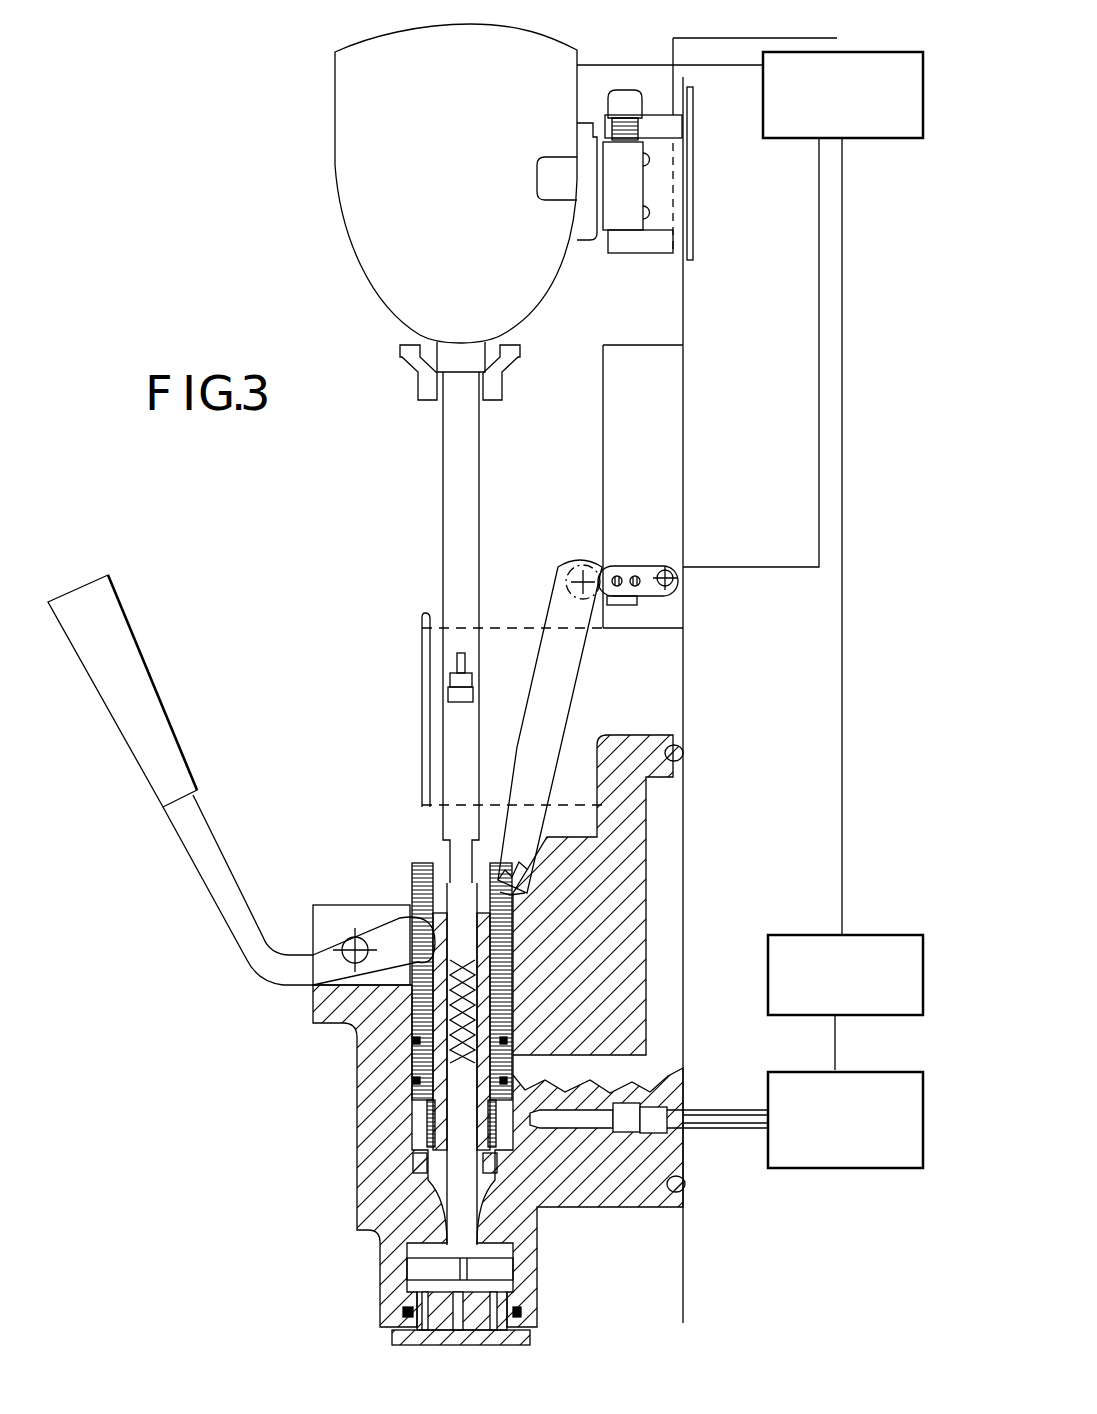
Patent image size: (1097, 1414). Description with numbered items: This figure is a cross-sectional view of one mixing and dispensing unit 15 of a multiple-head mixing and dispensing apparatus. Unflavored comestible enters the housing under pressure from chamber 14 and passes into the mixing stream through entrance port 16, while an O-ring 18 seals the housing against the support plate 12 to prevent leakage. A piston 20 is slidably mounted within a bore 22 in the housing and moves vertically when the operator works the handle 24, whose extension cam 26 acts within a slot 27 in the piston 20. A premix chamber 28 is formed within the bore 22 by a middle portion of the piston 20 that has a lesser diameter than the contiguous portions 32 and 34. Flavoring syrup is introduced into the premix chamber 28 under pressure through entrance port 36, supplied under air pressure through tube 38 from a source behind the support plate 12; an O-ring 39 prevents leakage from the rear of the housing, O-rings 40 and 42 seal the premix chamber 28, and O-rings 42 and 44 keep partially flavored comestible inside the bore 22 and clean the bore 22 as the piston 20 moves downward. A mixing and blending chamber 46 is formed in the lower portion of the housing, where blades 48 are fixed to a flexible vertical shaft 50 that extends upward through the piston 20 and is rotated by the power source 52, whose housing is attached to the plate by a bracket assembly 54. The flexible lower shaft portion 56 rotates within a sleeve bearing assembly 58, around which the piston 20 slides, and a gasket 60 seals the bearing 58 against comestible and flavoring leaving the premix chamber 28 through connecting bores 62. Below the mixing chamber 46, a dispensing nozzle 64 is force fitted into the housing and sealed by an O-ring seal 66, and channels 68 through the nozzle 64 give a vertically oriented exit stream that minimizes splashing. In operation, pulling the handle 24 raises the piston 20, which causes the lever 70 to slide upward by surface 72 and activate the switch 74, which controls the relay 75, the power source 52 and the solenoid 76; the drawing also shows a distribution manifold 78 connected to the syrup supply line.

The support plate 12 is at (688, 675).
The chamber 14 is at (670, 878).
The mixing and dispensing unit 15 is at (365, 605).
The entrance port 16 is at (567, 1052).
The O-ring 18 is at (685, 752).
The piston 20 is at (423, 866).
The bore 22 is at (524, 922).
The handle 24 is at (88, 580).
The extension cam 26 is at (426, 948).
The slot 27 is at (434, 918).
The premix chamber 28 is at (410, 1130).
The contiguous portion 32 is at (502, 950).
The contiguous portion 34 is at (499, 1177).
The entrance port 36 is at (592, 1125).
The tube 38 is at (652, 1103).
The O-ring 39 is at (672, 1108).
The O-ring 40 is at (411, 1160).
The O-ring 42 is at (514, 1080).
The O-ring 44 is at (514, 1038).
The mixing and blending chamber 46 is at (438, 1200).
The blades 48 is at (435, 1250).
The flexible vertical shaft 50 is at (450, 727).
The power source 52 is at (366, 206).
The bracket assembly 54 is at (627, 205).
The lower shaft portion 56 is at (446, 1002).
The sleeve bearing assembly 58 is at (428, 960).
The gasket 60 is at (418, 1268).
The connecting bores 62 is at (413, 1178).
The dispensing nozzle 64 is at (507, 1325).
The O-ring seal 66 is at (403, 1310).
The channels 68 is at (403, 1338).
The lever 70 is at (557, 672).
The surface 72 is at (540, 862).
The switch 74 is at (666, 570).
The relay 75 is at (870, 68).
The solenoid 76 is at (862, 960).
The distribution manifold 78 is at (890, 1088).